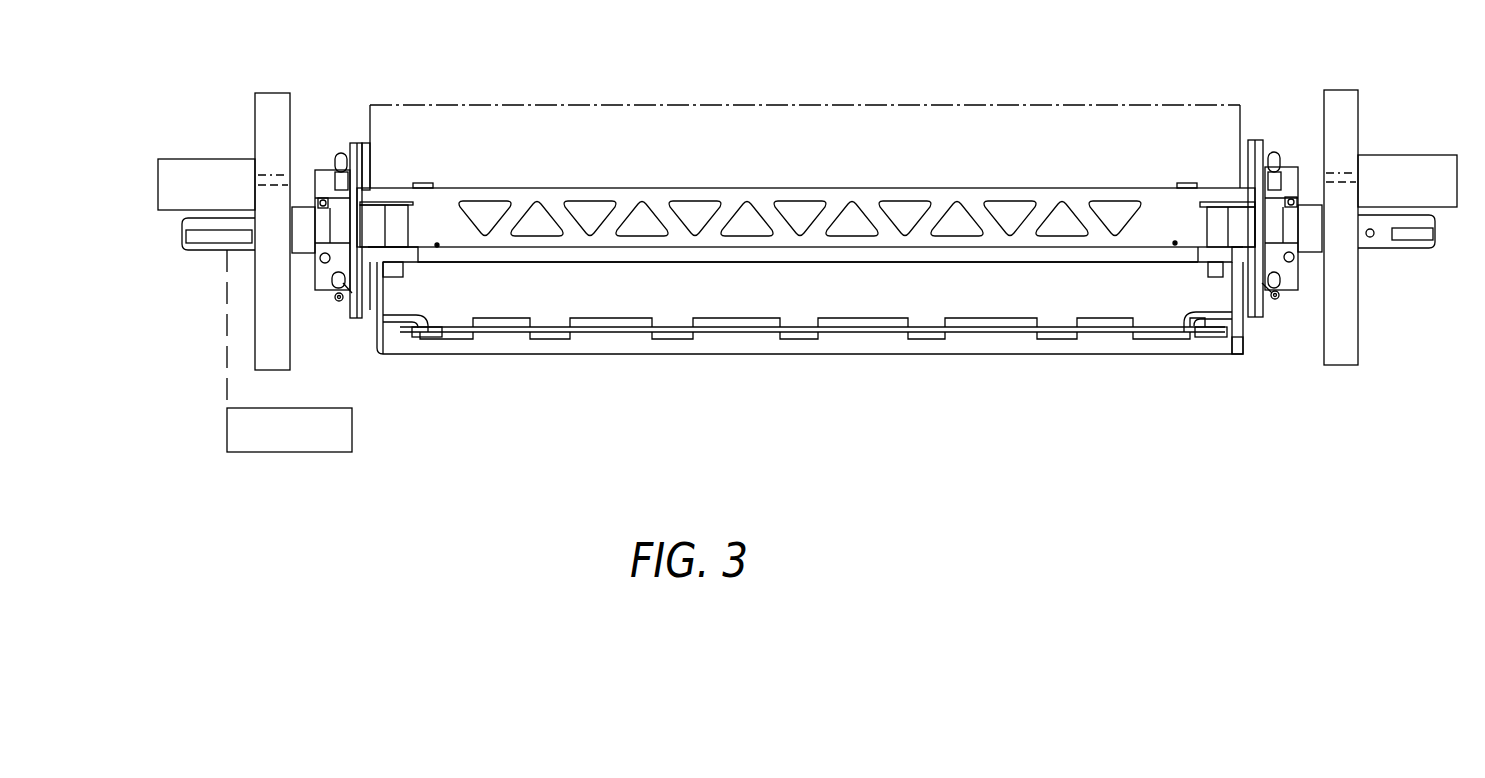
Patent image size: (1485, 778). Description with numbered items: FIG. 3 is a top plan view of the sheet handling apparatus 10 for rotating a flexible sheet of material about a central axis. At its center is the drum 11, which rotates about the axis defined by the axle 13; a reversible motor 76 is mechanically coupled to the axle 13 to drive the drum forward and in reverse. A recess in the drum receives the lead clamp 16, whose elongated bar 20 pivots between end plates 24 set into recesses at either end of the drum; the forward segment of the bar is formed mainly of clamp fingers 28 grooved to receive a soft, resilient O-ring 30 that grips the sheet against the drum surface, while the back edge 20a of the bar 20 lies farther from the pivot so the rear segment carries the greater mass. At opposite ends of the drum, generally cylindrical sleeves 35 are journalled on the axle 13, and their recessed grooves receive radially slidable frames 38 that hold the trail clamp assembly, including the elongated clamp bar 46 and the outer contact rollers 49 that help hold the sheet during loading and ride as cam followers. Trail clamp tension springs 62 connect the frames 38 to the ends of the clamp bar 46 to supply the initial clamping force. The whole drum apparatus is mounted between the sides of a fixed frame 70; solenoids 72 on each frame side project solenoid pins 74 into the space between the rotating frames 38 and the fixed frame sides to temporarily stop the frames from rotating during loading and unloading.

The apparatus 10 is at (500, 575).
The drum 11 is at (687, 105).
The axle 13 is at (1367, 249).
The lead clamp 16 is at (940, 356).
The elongated bar 20 is at (807, 341).
The back edge 20a is at (978, 254).
The end plates 24 is at (373, 350).
The clamp fingers 28 is at (682, 338).
The O-ring 30 is at (598, 338).
The sleeves 35 is at (318, 170).
The frames 38 is at (1253, 125).
The clamp bar 46 is at (868, 188).
The outer contact rollers 49 is at (397, 213).
The trail clamp tension springs 62 is at (341, 152).
The fixed frame 70 is at (293, 110).
The solenoids 72 is at (218, 159).
The solenoid pins 74 is at (784, 115).
The reversible motor 76 is at (262, 452).